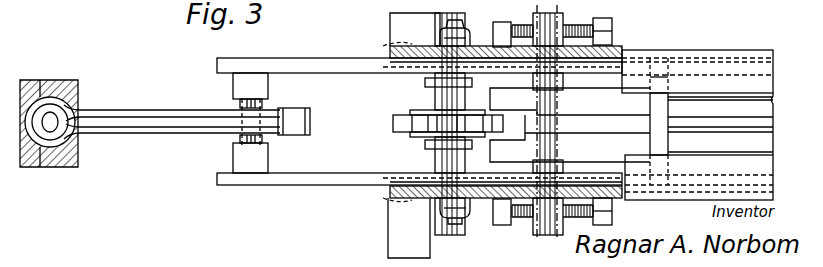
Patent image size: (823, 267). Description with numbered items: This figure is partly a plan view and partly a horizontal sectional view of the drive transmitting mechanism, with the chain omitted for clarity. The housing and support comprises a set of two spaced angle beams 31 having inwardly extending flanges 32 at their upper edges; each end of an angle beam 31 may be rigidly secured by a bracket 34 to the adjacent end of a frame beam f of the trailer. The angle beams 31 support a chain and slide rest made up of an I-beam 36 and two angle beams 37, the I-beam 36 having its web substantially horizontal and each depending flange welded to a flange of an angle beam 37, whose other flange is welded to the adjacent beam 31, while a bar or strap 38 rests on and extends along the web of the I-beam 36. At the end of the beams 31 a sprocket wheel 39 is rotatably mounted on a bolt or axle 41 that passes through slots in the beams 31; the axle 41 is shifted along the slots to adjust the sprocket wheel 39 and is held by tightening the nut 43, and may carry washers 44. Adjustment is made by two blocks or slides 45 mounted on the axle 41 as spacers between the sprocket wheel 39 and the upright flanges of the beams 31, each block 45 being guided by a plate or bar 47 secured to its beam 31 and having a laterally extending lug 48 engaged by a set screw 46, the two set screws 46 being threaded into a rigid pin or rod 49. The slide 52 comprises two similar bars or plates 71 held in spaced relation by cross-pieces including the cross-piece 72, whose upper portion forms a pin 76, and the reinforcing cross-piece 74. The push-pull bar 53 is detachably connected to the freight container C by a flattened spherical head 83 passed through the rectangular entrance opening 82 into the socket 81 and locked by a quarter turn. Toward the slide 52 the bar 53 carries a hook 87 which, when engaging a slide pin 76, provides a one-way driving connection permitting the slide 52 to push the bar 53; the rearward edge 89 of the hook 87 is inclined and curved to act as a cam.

The socket 81 is at (42, 82).
The rectangular entrance opening 82 is at (78, 134).
The flattened spherical head 83 is at (41, 165).
The freight container C is at (78, 95).
The push-pull bar 53 is at (160, 107).
The hook 87 is at (288, 130).
The cross-piece 72 is at (229, 90).
The rearward edge of the hook 89 is at (246, 128).
The pin 76 is at (262, 104).
The bars or plates 71 is at (317, 66).
The slide 52 is at (275, 183).
The washers 44 is at (388, 47).
The plate or bar 47 is at (388, 74).
The block or slide 45 is at (415, 72).
The bracket 34 is at (436, 20).
The frame beam f is at (390, 33).
The bolt or axle 41 is at (452, 220).
The nut 43 is at (464, 210).
The pin or rod 49 is at (540, 232).
The sprocket wheel 39 is at (395, 125).
The lug 48 is at (493, 32).
The set screw 46 is at (612, 25).
The angle beams 37 is at (590, 88).
The cross-piece 74 is at (646, 111).
The inwardly extending flanges 32 is at (708, 78).
The angle beams 31 is at (680, 50).
The bar or strap 38 is at (720, 124).
The I-beam 36 is at (768, 110).